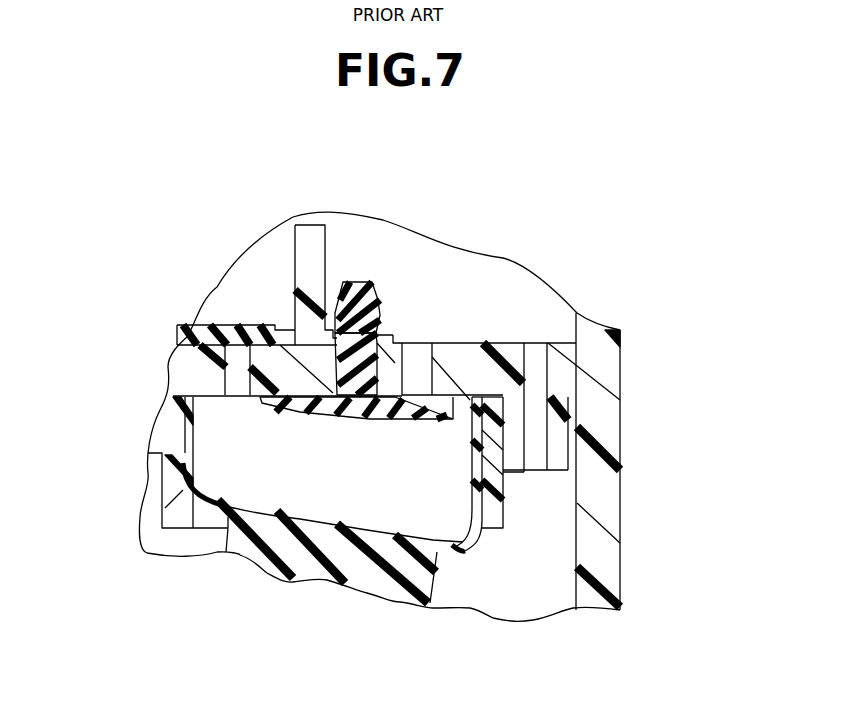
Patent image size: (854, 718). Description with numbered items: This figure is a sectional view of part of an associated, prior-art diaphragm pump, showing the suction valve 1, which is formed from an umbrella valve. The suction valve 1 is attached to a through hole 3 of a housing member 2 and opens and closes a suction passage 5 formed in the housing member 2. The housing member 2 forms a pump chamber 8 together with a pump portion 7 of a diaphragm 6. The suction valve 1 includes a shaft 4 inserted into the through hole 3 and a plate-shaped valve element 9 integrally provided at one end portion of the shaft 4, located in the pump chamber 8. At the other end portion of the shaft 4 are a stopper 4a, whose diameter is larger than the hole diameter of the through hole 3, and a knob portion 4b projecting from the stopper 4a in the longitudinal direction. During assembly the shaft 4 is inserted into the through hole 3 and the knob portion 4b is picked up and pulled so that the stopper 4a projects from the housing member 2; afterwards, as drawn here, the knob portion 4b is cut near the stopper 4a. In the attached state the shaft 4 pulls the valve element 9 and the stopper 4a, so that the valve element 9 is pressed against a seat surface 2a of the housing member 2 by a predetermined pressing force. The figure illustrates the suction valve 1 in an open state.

The suction valve 1 is at (383, 427).
The housing member 2 is at (620, 362).
The seat surface 2a is at (458, 397).
The through hole 3 is at (353, 420).
The shaft 4 is at (352, 292).
The stopper 4a is at (381, 318).
The knob portion 4b is at (372, 296).
The suction passage 5 is at (432, 382).
The diaphragm 6 is at (240, 543).
The pump portion 7 is at (465, 537).
The pump chamber 8 is at (237, 437).
The valve element 9 is at (268, 408).